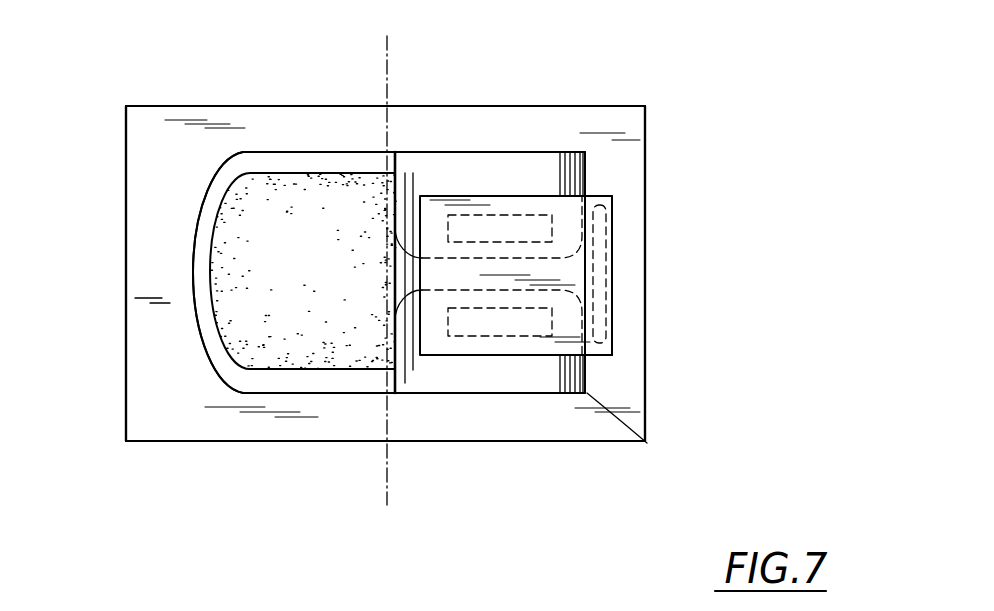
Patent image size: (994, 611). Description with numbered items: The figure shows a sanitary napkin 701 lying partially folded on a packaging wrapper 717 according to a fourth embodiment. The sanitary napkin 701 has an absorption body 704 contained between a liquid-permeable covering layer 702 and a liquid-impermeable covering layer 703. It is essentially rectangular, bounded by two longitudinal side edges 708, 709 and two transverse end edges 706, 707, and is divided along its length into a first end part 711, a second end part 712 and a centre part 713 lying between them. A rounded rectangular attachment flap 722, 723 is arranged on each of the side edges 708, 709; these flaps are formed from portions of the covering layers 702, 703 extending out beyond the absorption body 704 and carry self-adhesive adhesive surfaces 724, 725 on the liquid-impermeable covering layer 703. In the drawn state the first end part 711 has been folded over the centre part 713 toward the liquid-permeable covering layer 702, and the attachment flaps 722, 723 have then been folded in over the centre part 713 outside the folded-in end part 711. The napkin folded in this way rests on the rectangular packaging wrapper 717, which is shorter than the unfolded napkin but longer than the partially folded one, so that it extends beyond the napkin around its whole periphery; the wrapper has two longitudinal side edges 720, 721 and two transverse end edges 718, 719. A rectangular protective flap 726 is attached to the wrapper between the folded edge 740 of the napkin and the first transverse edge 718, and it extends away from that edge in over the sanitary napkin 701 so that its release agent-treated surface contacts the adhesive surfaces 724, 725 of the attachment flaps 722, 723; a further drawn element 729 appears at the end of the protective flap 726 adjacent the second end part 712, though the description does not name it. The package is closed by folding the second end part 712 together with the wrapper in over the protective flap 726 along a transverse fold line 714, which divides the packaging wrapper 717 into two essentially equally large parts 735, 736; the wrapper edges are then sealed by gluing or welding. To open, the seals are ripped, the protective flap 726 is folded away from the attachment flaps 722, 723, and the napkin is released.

The sanitary napkin 701 is at (248, 177).
The liquid-permeable covering layer 702 is at (237, 385).
The liquid-impermeable covering layer 703 is at (266, 370).
The absorption body 704 is at (300, 173).
The transverse end edge 706 is at (188, 262).
The transverse end edge 707 is at (388, 266).
The longitudinal side edge 708 is at (385, 368).
The longitudinal side edge 709 is at (395, 228).
The first end part 711 is at (318, 352).
The second end part 712 is at (465, 380).
The centre part 713 is at (488, 375).
The transverse fold line 714 is at (387, 85).
The packaging wrapper 717 is at (160, 418).
The first transverse edge 718 is at (645, 148).
The transverse end edge 719 is at (126, 146).
The longitudinal side edge 720 is at (172, 105).
The longitudinal side edge 721 is at (622, 443).
The attachment flap 722 is at (543, 383).
The attachment flap 723 is at (535, 160).
The adhesive surface 724 is at (455, 325).
The adhesive surface 725 is at (538, 215).
The protective flap 726 is at (603, 345).
The contact strip 729 is at (598, 265).
The wrapper part 735 is at (143, 340).
The wrapper part 736 is at (627, 406).
The folded edge 740 is at (647, 443).